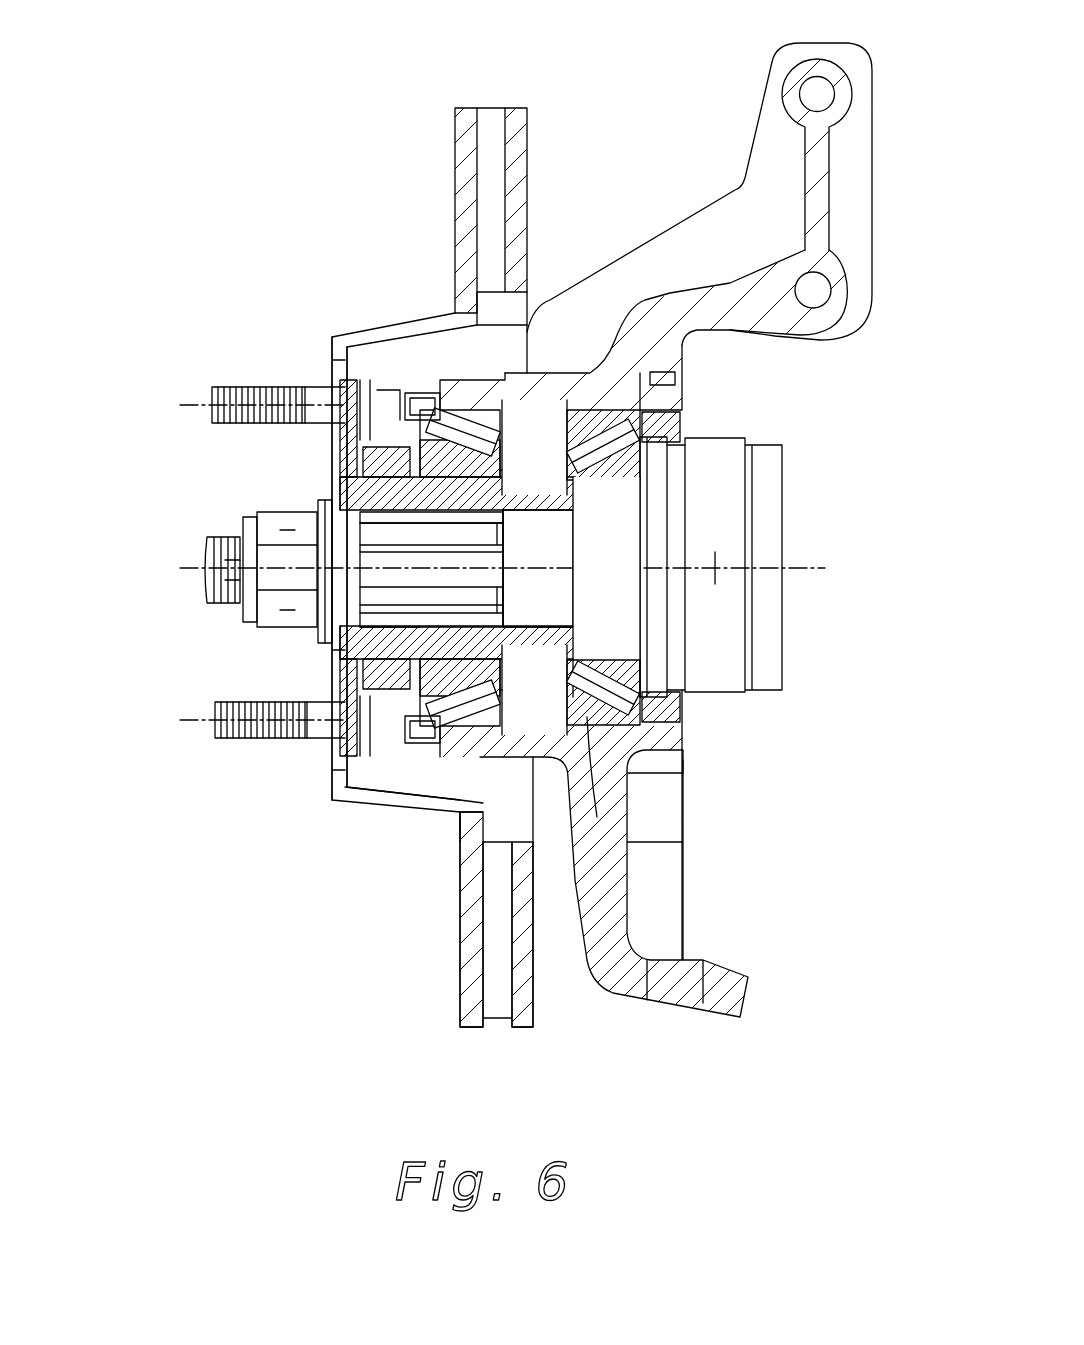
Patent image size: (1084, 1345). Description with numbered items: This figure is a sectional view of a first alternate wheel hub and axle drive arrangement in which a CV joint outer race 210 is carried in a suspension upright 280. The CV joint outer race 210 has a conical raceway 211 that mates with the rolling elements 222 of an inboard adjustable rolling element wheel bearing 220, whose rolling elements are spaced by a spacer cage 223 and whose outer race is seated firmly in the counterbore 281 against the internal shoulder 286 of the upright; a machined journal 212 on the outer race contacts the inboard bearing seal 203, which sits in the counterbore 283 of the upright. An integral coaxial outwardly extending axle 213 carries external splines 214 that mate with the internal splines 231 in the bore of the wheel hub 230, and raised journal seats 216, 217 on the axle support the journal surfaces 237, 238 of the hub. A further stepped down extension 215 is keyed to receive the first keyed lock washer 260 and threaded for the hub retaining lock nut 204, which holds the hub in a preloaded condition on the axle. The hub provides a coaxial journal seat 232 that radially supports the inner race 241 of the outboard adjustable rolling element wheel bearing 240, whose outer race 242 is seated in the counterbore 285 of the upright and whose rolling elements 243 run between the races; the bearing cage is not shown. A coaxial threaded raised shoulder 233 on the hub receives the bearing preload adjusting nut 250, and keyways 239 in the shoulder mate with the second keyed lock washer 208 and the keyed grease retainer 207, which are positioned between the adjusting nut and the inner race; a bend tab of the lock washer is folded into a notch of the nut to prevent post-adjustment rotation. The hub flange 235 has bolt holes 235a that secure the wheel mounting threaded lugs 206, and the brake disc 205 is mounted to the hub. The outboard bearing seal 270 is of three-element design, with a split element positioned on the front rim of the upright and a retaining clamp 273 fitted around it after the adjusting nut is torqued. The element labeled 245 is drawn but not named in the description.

The inboard bearing seal 203 is at (662, 430).
The hub retaining lock nut 204 is at (250, 522).
The brake disc 205 is at (512, 106).
The wheel mounting threaded lugs 206 is at (213, 378).
The grease retainer 207 is at (445, 770).
The second keyed lock washer 208 is at (395, 405).
The CV joint outer race 210 is at (790, 482).
The conical raceway 211 is at (585, 495).
The machined journal 212 is at (653, 685).
The integral coaxial outwardly extending axle 213 is at (205, 548).
The external splines 214 is at (386, 572).
The stepped down extension 215 is at (220, 610).
The journal seat 216 is at (306, 593).
The journal seat 217 is at (513, 538).
The inboard adjustable rolling element wheel bearing 220 is at (600, 778).
The rolling elements 222 is at (598, 668).
The spacer cage 223 is at (620, 750).
The wheel hub 230 is at (332, 500).
The internal splines 231 is at (335, 437).
The coaxial journal seat 232 is at (499, 690).
The coaxial threaded raised shoulder 233 is at (426, 524).
The hub flange 235 is at (343, 350).
The bolt holes 235a is at (330, 360).
The journal surface 237 is at (320, 653).
The journal surface 238 is at (540, 627).
The keyways 239 is at (402, 639).
The outboard adjustable rolling element wheel bearing 240 is at (495, 447).
The inner race 241 is at (502, 465).
The outer race 242 is at (498, 392).
The rolling elements 243 is at (502, 695).
The disc hat 245 is at (455, 825).
The bearing preload adjusting nut 250 is at (360, 800).
The first keyed lock washer 260 is at (306, 496).
The outboard bearing seal 270 is at (360, 682).
The retaining clamp 273 is at (330, 770).
The suspension upright 280 is at (752, 122).
The counterbore 281 is at (620, 843).
The counterbore 283 is at (662, 380).
The counterbore 285 is at (460, 397).
The internal shoulder / front rim 286 is at (500, 735).